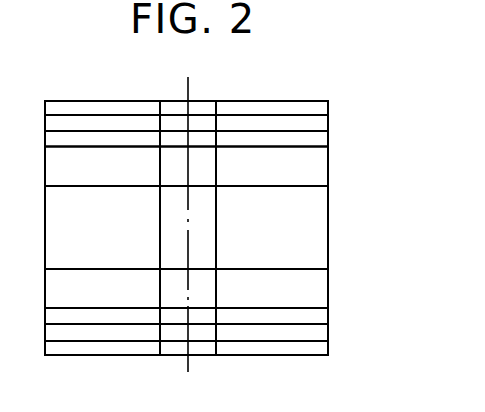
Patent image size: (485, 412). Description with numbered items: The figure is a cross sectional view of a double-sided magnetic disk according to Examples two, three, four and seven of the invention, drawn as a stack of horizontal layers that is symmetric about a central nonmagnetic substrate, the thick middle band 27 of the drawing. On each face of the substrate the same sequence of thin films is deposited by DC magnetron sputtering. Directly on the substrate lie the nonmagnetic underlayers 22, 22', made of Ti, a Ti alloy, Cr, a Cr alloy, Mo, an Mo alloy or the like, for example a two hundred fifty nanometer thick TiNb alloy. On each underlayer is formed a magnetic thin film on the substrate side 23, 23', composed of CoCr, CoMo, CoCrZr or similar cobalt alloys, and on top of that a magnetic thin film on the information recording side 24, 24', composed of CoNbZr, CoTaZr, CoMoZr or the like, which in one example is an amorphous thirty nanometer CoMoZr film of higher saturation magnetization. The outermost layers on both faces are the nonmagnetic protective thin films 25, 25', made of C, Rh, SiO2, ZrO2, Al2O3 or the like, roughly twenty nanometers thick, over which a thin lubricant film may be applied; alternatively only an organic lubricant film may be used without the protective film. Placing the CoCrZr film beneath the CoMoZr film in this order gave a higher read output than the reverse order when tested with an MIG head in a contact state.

The nonmagnetic protective thin film 25 is at (229, 76).
The magnetic thin film on the information recording side 24 is at (229, 104).
The magnetic thin film on the substrate side 23 is at (229, 132).
The nonmagnetic underlayer 22 is at (229, 170).
The core layer 27 is at (318, 228).
The nonmagnetic underlayer 22' is at (233, 288).
The magnetic thin film on the substrate side 23' is at (233, 322).
The magnetic thin film on the information recording side 24' is at (233, 349).
The nonmagnetic protective thin film 25' is at (233, 375).